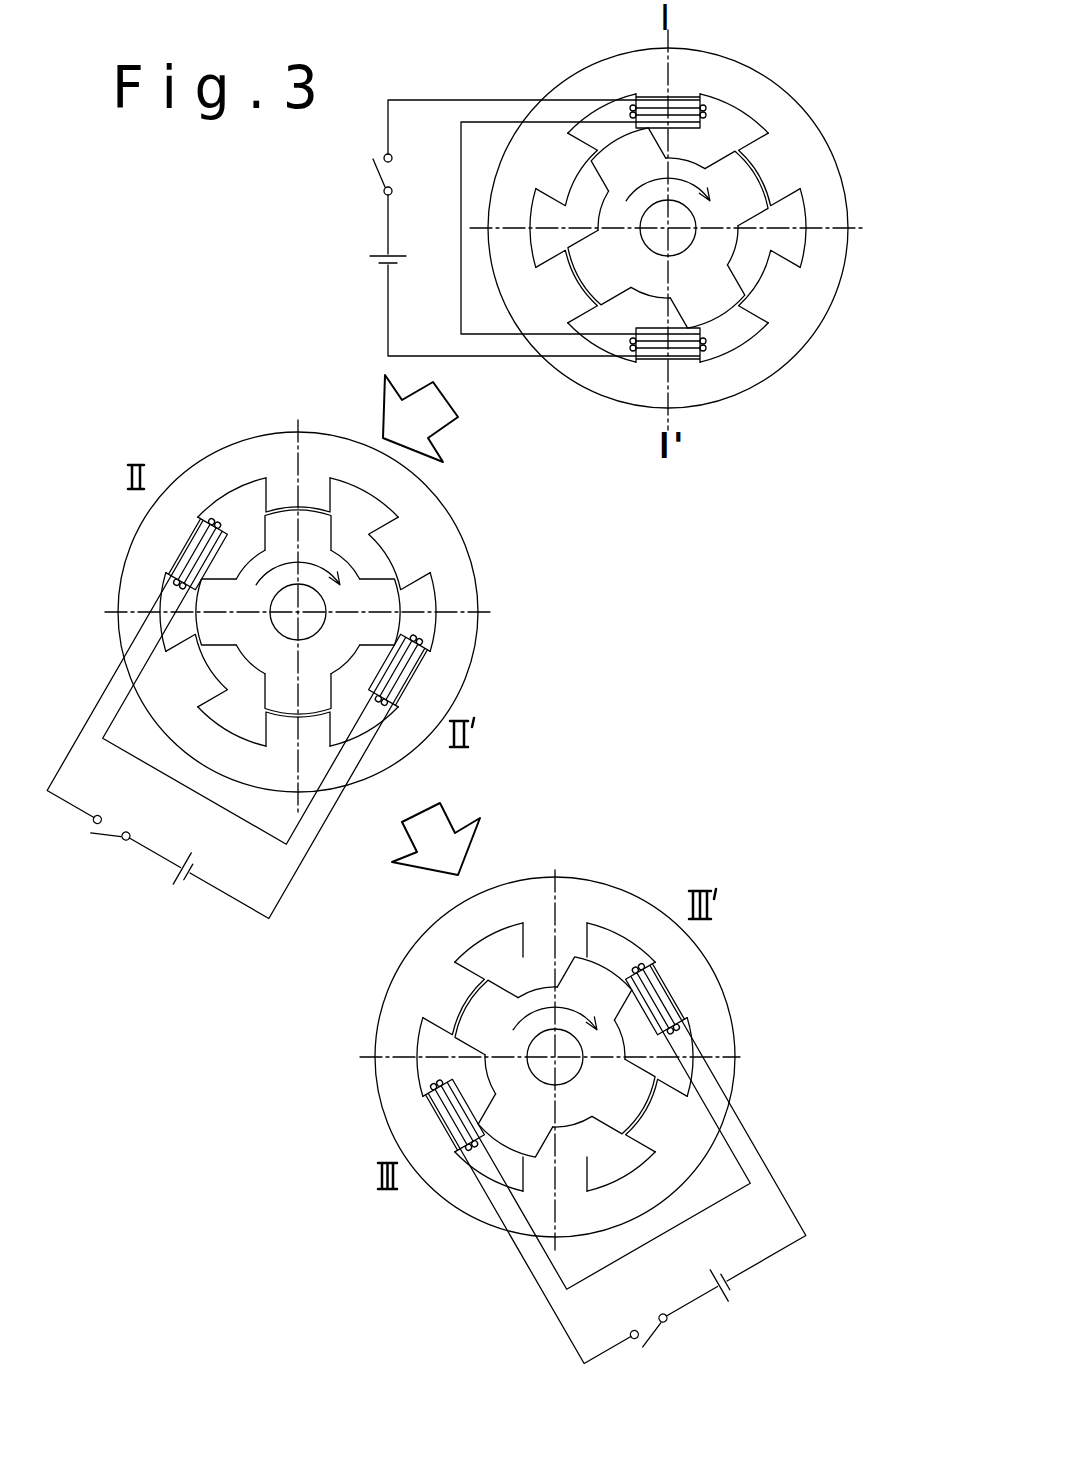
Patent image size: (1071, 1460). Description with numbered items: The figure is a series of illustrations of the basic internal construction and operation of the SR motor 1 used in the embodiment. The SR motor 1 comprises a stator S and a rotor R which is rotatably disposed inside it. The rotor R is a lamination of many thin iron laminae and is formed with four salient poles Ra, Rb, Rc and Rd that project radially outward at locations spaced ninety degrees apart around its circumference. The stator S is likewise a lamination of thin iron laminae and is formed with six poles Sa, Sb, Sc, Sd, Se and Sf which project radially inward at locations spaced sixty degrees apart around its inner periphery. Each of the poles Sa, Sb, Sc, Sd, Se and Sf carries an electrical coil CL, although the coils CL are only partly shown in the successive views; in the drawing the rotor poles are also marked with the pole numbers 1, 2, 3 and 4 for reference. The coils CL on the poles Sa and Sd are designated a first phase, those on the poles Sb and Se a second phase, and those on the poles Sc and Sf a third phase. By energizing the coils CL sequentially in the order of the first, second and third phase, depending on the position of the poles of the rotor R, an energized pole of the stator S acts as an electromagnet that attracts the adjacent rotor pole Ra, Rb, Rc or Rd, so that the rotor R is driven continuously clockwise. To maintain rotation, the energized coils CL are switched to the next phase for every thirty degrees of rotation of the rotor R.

The stator S is at (668, 209).
The rotor R is at (647, 318).
The stator pole Sa is at (681, 64).
The stator pole Sb is at (544, 126).
The stator pole Sc is at (548, 332).
The stator pole Sd is at (692, 397).
The stator pole Se is at (801, 325).
The stator pole Sf is at (799, 133).
The salient pole Ra is at (613, 99).
The salient pole Rb is at (520, 245).
The salient pole Rc is at (742, 357).
The salient pole Rd is at (790, 163).
The electrical coil CL is at (677, 252).
The SR motor 1 is at (626, 157).
The rotor pole 2 is at (597, 268).
The rotor pole 3 is at (708, 299).
The rotor pole 4 is at (739, 186).